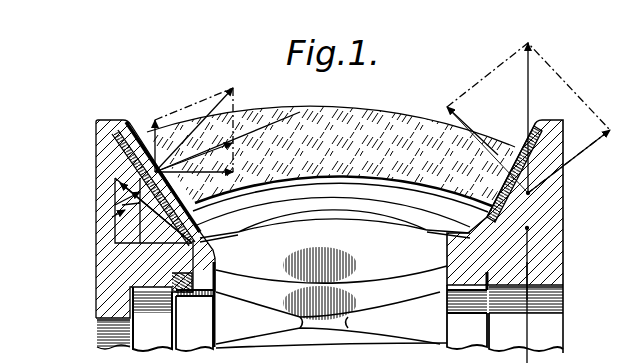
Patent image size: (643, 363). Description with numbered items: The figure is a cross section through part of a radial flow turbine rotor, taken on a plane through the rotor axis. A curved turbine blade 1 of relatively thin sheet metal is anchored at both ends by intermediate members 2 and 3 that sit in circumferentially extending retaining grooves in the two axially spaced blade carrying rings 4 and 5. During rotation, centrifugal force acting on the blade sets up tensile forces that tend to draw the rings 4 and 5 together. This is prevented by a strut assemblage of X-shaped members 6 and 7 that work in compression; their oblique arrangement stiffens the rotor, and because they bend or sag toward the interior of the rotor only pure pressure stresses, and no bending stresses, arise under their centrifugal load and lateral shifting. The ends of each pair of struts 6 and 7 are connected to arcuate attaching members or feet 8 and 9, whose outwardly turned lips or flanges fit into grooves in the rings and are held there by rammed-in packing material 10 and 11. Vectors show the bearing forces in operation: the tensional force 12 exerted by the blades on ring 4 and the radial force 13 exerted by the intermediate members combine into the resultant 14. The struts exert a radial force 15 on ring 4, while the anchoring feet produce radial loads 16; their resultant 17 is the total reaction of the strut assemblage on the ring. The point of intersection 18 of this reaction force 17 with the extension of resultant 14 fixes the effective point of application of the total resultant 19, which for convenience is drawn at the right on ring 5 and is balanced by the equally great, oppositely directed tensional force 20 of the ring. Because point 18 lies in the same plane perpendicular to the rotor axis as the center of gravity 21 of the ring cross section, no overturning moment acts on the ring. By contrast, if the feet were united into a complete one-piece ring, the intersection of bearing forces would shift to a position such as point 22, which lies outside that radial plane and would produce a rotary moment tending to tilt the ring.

The curved turbine blade 1 is at (387, 119).
The intermediate member 2 is at (120, 119).
The intermediate member 3 is at (540, 196).
The blade carrying ring 4 is at (108, 280).
The blade carrying ring 5 is at (555, 284).
The X-shaped strut member 6 is at (373, 276).
The X-shaped strut member 7 is at (414, 332).
The arcuate attaching member or foot 8 is at (197, 297).
The arcuate attaching member or foot 9 is at (463, 286).
The rammed-in packing material 10 is at (172, 290).
The rammed-in packing material 11 is at (495, 291).
The tensional force 12 is at (226, 149).
The radial force 13 is at (137, 146).
The resultant force 14 is at (208, 114).
The radial force 15 is at (146, 231).
The radial load 16 is at (122, 205).
The reaction force 17 is at (130, 182).
The point of intersection 18 is at (126, 188).
The total resultant 19 is at (529, 94).
The tensional force of the ring 20 is at (527, 263).
The center of gravity 21 is at (527, 229).
The point 22 is at (112, 217).